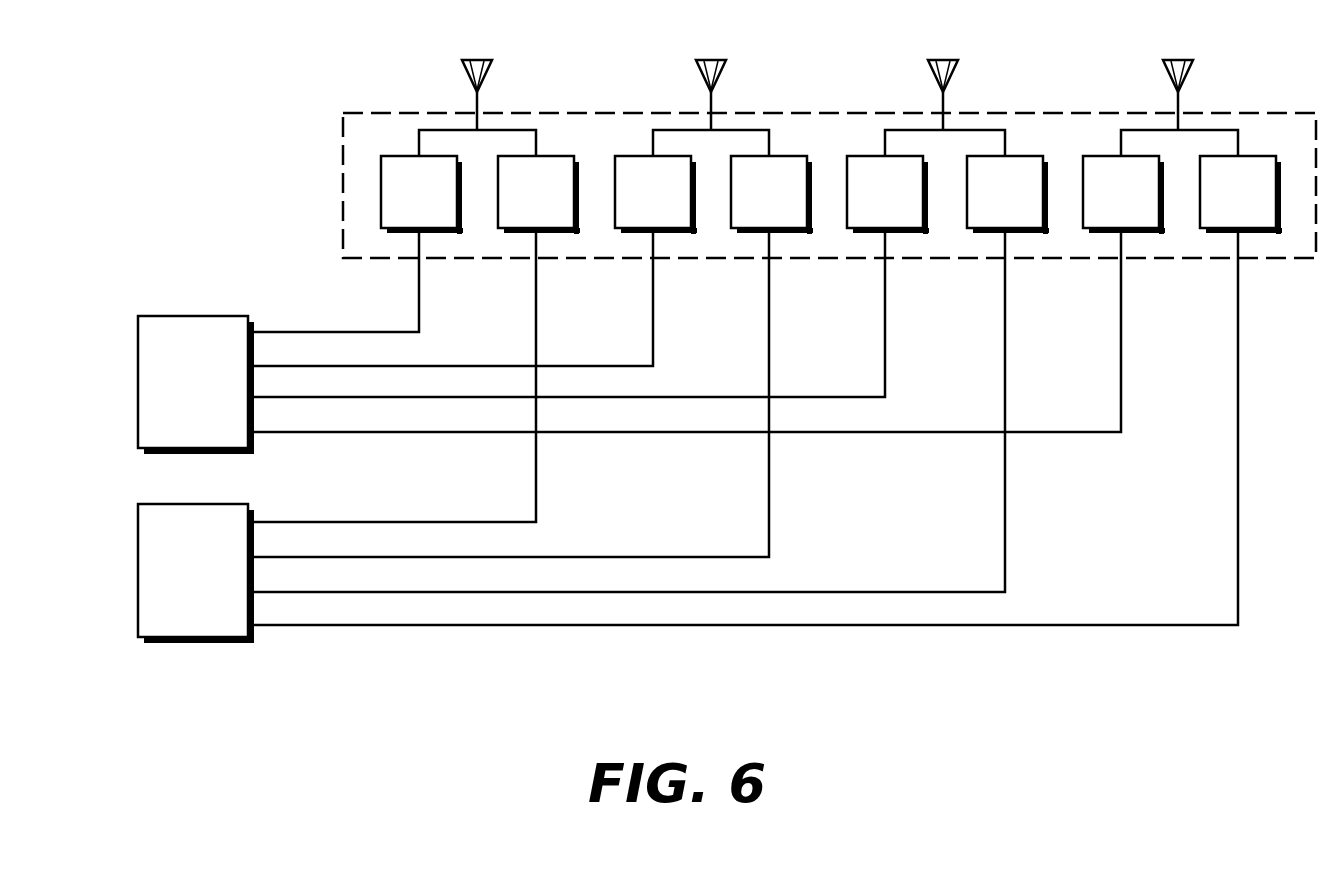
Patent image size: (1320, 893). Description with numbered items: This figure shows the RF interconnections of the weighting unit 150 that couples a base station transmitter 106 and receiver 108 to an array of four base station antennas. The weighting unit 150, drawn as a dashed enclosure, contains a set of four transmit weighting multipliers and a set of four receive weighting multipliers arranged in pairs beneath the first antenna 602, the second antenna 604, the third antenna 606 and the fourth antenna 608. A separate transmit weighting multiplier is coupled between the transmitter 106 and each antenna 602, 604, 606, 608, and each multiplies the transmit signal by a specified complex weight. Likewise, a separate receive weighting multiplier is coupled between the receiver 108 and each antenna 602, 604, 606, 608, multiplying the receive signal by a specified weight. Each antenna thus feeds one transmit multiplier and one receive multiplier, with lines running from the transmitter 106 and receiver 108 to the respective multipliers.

The base station antenna BSAnt-0 602 is at (482, 60).
The base station antenna BSAnt-1 604 is at (716, 60).
The base station antenna BSAnt-2 606 is at (948, 60).
The base station antenna BSAnt-3 608 is at (1183, 60).
The weighting unit 150 is at (342, 140).
The transmitter 106 is at (138, 382).
The receiver 108 is at (138, 570).